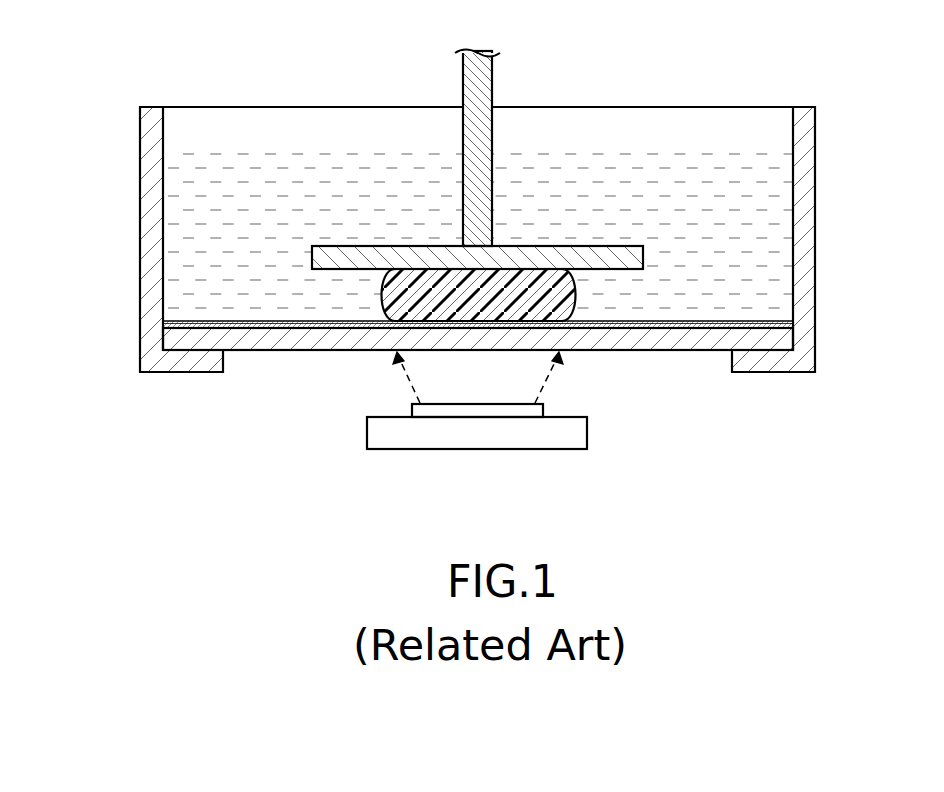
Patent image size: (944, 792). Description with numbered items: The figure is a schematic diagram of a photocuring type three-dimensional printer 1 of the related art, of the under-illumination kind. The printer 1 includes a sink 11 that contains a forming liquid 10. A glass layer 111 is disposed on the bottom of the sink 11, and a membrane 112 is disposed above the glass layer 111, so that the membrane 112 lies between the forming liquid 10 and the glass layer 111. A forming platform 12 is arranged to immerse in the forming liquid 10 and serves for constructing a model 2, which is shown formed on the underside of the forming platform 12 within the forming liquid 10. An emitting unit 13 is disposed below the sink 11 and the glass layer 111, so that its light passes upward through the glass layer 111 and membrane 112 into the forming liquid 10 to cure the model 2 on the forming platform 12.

The 3D printer 1 is at (312, 64).
The forming liquid 10 is at (720, 175).
The sink 11 is at (430, 279).
The glass layer 111 is at (273, 333).
The membrane 112 is at (632, 327).
The forming platform 12 is at (598, 262).
The emitting unit 13 is at (568, 427).
The model 2 is at (545, 295).